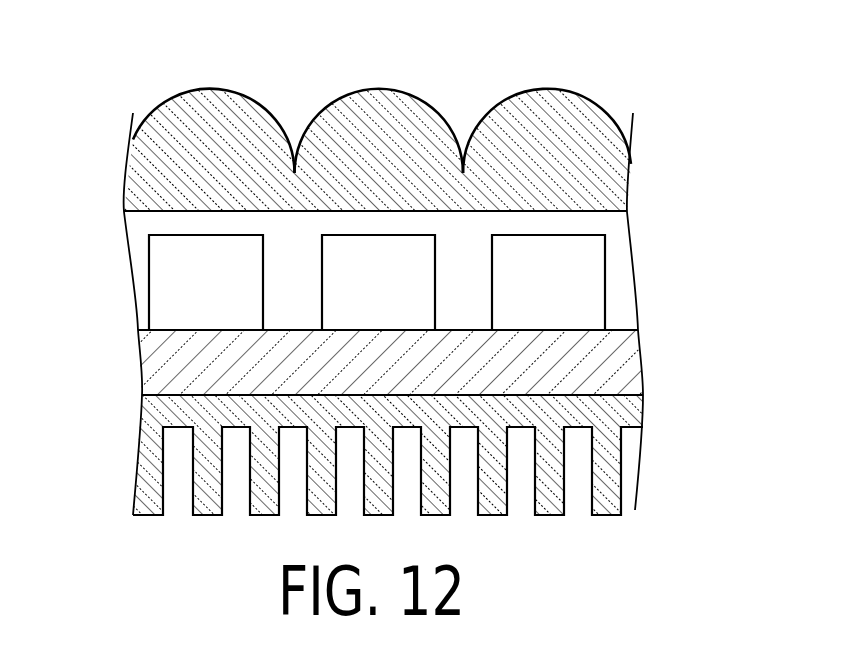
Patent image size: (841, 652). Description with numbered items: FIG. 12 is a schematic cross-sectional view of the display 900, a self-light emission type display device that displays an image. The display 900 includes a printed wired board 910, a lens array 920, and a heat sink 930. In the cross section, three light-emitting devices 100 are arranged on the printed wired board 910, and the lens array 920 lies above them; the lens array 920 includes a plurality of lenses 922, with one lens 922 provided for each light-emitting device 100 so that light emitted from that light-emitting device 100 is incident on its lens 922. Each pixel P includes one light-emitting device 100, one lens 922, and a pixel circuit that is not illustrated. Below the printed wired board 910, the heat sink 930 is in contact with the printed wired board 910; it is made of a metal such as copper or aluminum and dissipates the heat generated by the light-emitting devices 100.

The display 900 is at (641, 75).
The lens array 920 is at (136, 163).
The lens 922 is at (253, 120).
The light-emitting device 100 is at (159, 287).
The printed wired board 910 is at (159, 369).
The heat sink 930 is at (150, 420).
The pixel P is at (204, 66).